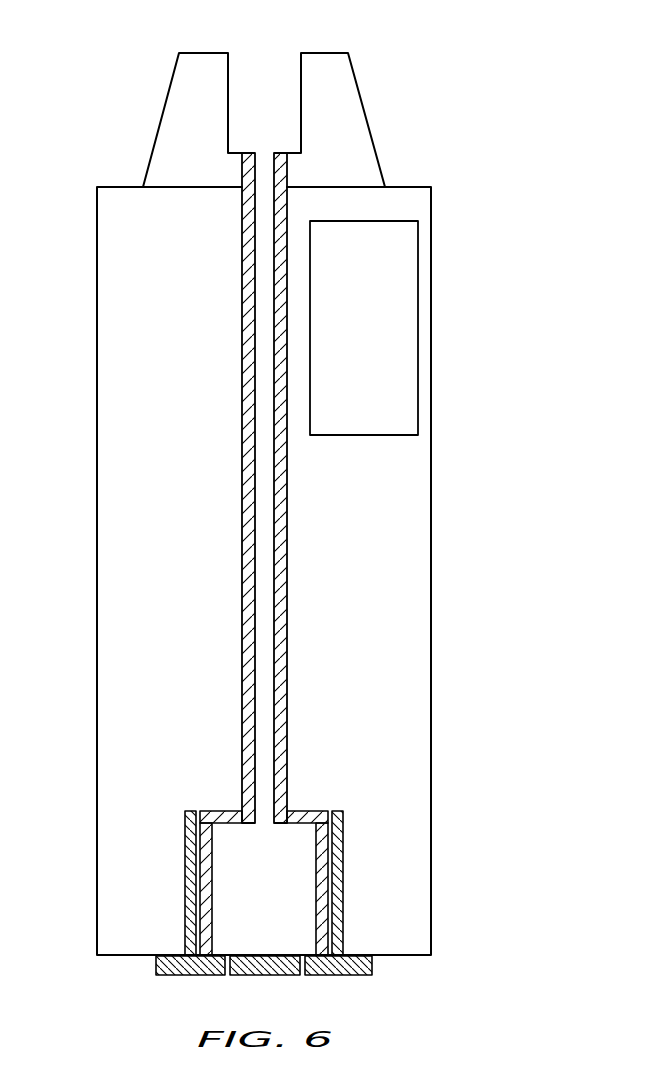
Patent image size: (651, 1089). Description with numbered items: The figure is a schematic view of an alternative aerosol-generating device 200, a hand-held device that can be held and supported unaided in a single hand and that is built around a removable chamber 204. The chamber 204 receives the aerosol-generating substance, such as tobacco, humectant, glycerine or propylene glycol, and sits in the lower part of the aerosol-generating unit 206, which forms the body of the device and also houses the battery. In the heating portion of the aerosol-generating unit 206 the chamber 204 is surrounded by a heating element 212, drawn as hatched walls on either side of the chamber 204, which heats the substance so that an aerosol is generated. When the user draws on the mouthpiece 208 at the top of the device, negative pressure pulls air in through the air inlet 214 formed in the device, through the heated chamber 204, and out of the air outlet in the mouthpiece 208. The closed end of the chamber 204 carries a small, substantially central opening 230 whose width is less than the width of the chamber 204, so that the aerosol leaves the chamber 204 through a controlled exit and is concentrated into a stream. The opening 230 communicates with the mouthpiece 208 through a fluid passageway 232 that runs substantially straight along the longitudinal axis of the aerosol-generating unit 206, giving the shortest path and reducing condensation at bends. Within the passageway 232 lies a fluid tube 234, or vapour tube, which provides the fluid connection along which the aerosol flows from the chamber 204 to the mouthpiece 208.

The aerosol-generating device 200 is at (309, 490).
The chamber 204 is at (265, 856).
The aerosol-generating unit 206 is at (106, 290).
The mouthpiece 208 is at (275, 62).
The heating element 212 is at (185, 851).
The air inlet 214 is at (208, 913).
The opening 230 is at (264, 818).
The fluid passageway 232 is at (249, 426).
The fluid tube 234 is at (258, 497).